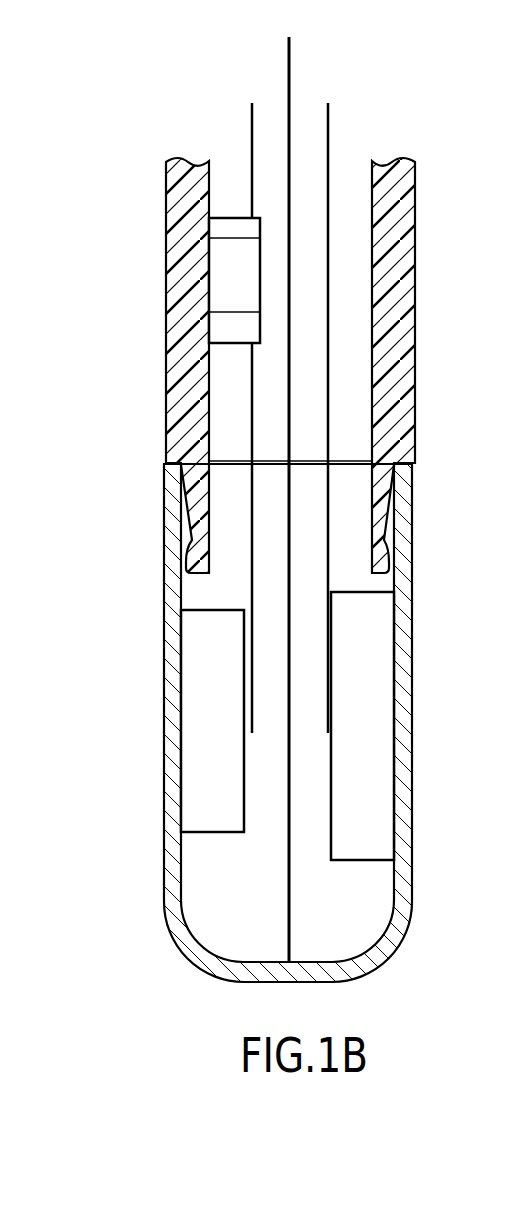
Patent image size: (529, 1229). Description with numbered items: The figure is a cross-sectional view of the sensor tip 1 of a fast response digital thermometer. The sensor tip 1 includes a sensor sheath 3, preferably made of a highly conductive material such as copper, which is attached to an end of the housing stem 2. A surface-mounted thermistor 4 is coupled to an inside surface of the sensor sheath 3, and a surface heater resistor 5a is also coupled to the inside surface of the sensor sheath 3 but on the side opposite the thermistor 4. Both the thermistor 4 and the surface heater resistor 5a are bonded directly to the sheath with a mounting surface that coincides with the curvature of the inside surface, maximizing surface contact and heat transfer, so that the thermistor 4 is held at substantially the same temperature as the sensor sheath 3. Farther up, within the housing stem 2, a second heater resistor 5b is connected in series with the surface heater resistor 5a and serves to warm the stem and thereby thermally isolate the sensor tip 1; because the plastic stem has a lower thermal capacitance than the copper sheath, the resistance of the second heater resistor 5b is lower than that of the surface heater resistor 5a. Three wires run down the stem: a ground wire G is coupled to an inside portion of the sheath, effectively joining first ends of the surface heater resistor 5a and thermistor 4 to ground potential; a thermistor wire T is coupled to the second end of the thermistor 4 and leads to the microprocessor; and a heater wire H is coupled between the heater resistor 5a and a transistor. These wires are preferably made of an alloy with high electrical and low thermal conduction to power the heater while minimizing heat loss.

The sensor tip 1 is at (80, 492).
The housing stem 2 is at (415, 272).
The sensor sheath 3 is at (410, 885).
The surface-mounted thermistor 4 is at (368, 707).
The surface heater resistor 5a is at (208, 710).
The second heater resistor 5b is at (222, 265).
The ground wire G is at (290, 65).
The heater wire H is at (252, 118).
The thermistor wire T is at (329, 120).